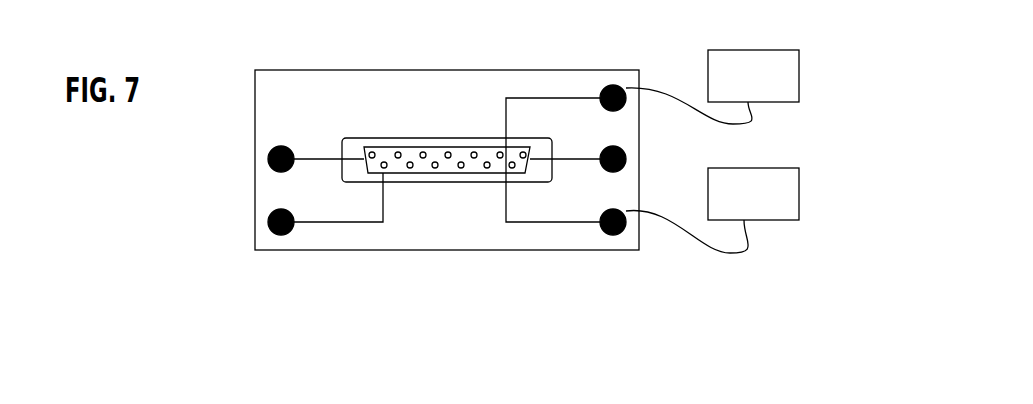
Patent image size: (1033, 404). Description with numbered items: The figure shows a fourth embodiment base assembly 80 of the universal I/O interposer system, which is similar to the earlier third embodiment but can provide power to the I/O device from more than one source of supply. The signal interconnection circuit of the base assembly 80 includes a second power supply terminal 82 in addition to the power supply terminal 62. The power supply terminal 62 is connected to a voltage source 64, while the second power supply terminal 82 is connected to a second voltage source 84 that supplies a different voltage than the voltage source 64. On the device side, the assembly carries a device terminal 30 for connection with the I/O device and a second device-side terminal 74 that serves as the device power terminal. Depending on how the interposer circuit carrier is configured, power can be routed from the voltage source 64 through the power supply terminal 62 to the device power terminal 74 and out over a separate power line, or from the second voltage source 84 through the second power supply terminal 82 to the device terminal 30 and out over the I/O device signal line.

The fourth embodiment base assembly 80 is at (435, 70).
The device terminal 30 is at (271, 170).
The second device-side terminal 74 is at (281, 235).
The second power supply terminal 82 is at (622, 70).
The power supply terminal 62 is at (603, 234).
The second voltage source 84 is at (782, 50).
The voltage source 64 is at (786, 168).